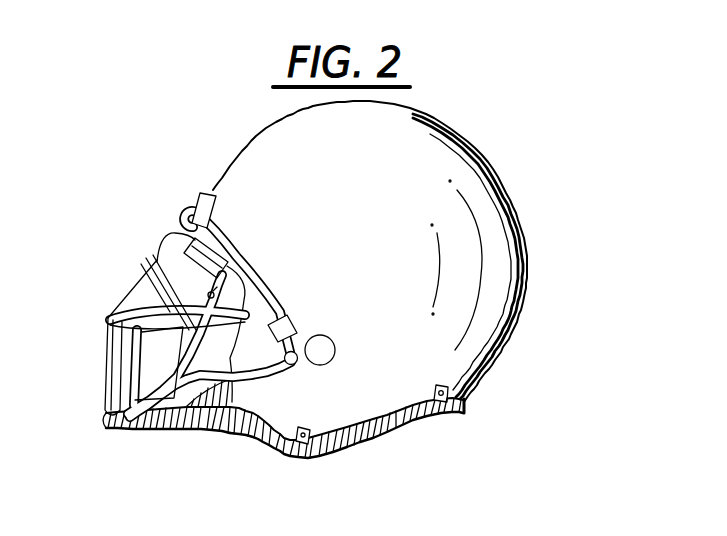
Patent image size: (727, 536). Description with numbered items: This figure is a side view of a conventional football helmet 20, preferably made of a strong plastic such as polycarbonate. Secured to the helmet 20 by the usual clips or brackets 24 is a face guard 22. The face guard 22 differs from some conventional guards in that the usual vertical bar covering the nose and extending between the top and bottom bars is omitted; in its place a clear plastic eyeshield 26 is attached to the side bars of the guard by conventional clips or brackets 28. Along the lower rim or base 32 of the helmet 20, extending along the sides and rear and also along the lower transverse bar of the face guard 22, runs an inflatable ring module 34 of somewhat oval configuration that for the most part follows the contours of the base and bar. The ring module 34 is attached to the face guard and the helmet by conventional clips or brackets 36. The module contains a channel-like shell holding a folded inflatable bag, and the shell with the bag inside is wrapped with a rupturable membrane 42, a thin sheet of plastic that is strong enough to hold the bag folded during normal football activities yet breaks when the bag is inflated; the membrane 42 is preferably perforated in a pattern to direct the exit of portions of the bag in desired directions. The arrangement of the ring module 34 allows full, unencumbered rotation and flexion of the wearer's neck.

The football helmet 20 is at (524, 237).
The face guard 22 is at (108, 367).
The clips or brackets 24 is at (297, 318).
The eyeshield 26 is at (162, 255).
The clips or brackets 28 is at (195, 284).
The lower rim or base 32 is at (403, 423).
The inflatable ring module 34 is at (449, 413).
The clips or brackets 36 is at (277, 457).
The rupturable membrane 42 is at (337, 443).